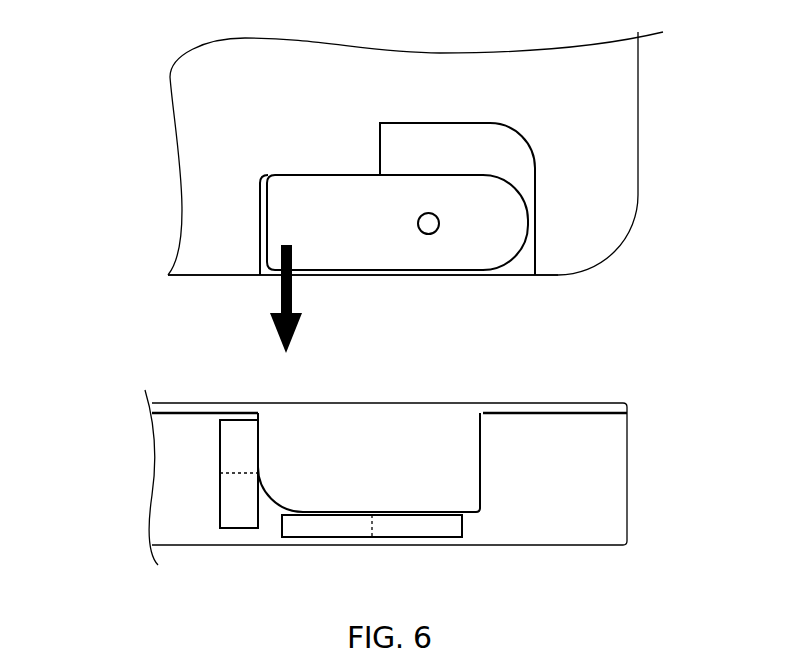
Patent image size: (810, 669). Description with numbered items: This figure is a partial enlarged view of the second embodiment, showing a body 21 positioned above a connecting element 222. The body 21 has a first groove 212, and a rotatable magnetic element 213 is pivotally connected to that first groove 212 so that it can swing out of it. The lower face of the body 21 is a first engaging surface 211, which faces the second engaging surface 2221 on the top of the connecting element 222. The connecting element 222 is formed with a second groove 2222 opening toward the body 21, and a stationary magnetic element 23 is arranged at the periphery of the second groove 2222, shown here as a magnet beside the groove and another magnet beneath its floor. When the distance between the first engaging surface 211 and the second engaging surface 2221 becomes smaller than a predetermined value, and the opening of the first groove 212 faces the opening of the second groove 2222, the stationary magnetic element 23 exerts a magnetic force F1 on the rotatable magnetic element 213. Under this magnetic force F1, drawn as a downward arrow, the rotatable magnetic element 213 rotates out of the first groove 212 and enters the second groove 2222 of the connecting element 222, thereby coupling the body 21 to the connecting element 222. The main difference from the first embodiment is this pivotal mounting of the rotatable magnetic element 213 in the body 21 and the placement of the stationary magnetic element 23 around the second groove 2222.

The body 21 is at (617, 108).
The first engaging surface 211 is at (187, 281).
The first groove 212 is at (523, 258).
The rotatable magnetic element 213 is at (288, 210).
The magnetic force F1 is at (280, 303).
The connecting element 222 is at (608, 430).
The second engaging surface 2221 is at (594, 408).
The second groove 2222 is at (460, 475).
The stationary magnetic element 23 is at (222, 508).